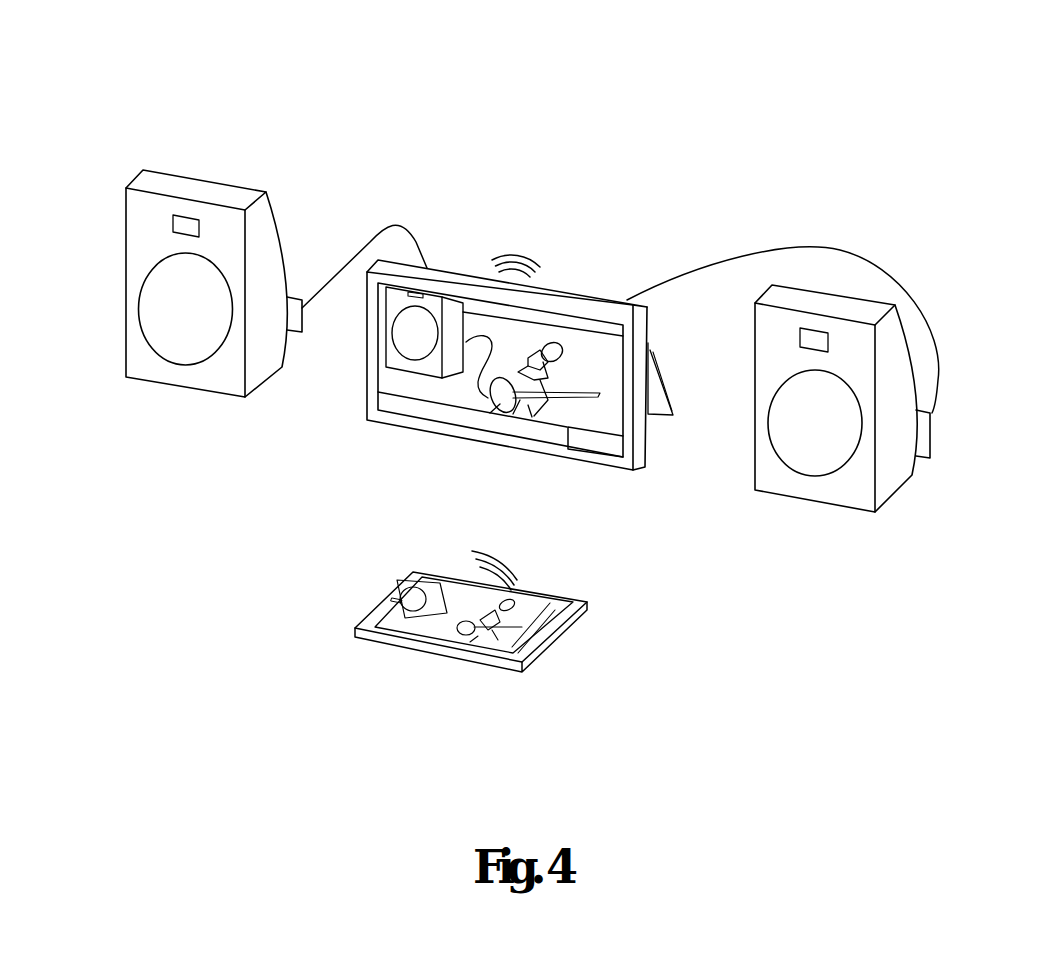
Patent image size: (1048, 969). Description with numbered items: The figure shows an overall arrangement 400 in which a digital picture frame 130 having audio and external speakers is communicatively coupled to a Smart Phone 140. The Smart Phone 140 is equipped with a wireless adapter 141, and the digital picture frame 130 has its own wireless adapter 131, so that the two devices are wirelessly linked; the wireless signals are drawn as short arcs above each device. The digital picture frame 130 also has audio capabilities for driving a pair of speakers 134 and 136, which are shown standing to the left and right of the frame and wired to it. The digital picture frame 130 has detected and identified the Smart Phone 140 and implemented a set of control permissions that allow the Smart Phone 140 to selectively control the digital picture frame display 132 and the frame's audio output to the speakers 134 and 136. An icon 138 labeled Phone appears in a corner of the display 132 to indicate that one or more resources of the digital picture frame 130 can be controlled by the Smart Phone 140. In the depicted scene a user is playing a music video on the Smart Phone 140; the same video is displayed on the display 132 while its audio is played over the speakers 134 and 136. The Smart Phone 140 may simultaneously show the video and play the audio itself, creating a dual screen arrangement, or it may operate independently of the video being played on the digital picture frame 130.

The media system 400 is at (960, 94).
The digital picture frame 130 is at (472, 272).
The wireless adapter 131 is at (524, 253).
The digital picture frame display 132 is at (583, 346).
The speaker 134 is at (207, 180).
The speaker 136 is at (853, 296).
The icon 138 is at (591, 452).
The Smart Phone 140 is at (573, 627).
The wireless adapter 141 is at (513, 557).